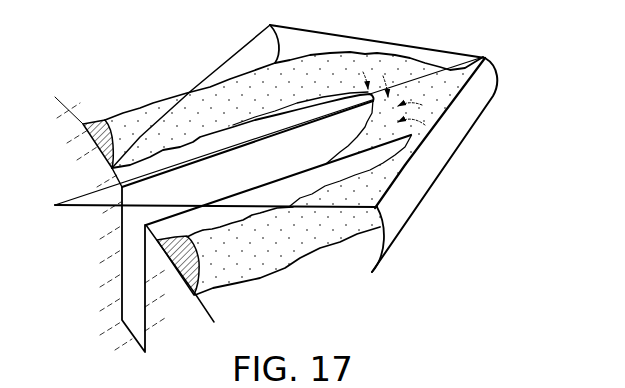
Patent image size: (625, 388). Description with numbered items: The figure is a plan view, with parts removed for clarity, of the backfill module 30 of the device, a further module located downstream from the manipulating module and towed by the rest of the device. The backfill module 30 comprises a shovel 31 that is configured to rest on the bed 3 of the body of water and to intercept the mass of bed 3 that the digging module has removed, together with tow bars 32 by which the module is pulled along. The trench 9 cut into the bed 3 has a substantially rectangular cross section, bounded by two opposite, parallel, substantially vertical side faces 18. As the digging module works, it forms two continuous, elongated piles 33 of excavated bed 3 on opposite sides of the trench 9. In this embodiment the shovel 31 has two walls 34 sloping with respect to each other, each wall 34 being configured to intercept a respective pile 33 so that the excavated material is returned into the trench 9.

The bed 3 is at (214, 302).
The trench 9 is at (203, 184).
The side faces 18 is at (130, 281).
The backfill module 30 is at (463, 207).
The shovel 31 is at (400, 236).
The tow bars 32 is at (215, 70).
The piles 33 is at (123, 117).
The walls 34 is at (412, 43).